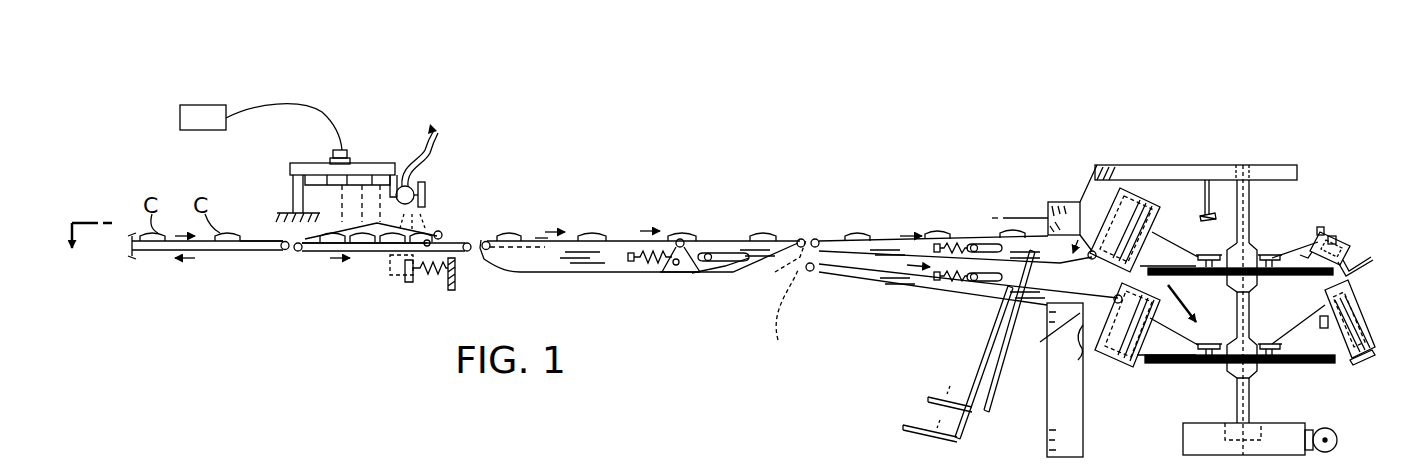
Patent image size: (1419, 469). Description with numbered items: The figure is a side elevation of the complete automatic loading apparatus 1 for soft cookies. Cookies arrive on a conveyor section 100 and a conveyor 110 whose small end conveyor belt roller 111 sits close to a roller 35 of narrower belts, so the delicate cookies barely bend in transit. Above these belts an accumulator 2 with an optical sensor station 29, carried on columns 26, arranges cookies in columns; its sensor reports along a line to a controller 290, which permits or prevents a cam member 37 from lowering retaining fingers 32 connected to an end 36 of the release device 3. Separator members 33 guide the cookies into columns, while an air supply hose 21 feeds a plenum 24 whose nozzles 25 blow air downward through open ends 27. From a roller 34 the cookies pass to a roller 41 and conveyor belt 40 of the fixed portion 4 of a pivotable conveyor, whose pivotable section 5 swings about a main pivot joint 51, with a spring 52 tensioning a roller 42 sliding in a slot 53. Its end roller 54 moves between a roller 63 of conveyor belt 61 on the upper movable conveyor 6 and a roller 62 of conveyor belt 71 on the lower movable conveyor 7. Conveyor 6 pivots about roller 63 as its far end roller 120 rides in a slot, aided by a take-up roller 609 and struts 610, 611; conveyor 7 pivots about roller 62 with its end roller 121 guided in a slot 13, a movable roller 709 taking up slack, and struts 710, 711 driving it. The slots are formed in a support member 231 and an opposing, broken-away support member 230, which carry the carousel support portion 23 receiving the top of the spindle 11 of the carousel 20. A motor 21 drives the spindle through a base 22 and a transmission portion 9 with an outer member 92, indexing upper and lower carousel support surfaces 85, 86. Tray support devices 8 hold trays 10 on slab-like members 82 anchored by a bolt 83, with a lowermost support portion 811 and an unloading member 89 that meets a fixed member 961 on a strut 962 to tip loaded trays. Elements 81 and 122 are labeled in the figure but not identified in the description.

The automatic loading apparatus 1 is at (632, 135).
The accumulator 2 is at (388, 90).
The release device 3 is at (456, 216).
The fixed portion of pivotable conveyor belt 4 is at (620, 230).
The pivotable section 5 is at (727, 228).
The upper movable conveyor belt 6 is at (832, 220).
The lower movable conveyor belt 7 is at (833, 300).
The tray support device 8 is at (1366, 220).
The transmission portion 9 is at (1246, 330).
The trays 10 is at (1351, 300).
The spindle 11 is at (1256, 190).
The slot 13 is at (1088, 362).
The carousel 20 is at (1246, 141).
The motor 21 is at (435, 126).
The base 22 is at (301, 110).
The carousel support portion 23 is at (323, 176).
The plenum 24 is at (404, 186).
The nozzles 25 is at (428, 181).
The columns 26 is at (293, 190).
The nozzle open ends 27 is at (426, 201).
The optical sensor station 29 is at (295, 164).
The retaining fingers 32 is at (445, 237).
The separator member 33 is at (358, 232).
The roller 34 is at (468, 255).
The conveyor belt roller 35 is at (299, 252).
The end of accumulator retaining portion 36 is at (414, 276).
The cam member 37 is at (425, 246).
The conveyor belt 40 is at (535, 238).
The roller 41 is at (490, 255).
The roller 42 is at (720, 263).
The main pivot joint 51 is at (681, 239).
The spring 52 is at (641, 263).
The slot 53 is at (746, 263).
The end roller 54 is at (800, 242).
The conveyor belt 61 is at (883, 240).
The roller 62 is at (802, 288).
The roller 63 is at (815, 238).
The conveyor belt 71 is at (860, 268).
The lower left roller 81 is at (1128, 368).
The slab-like members 82 is at (1152, 235).
The bolt 83 is at (1209, 255).
The upper carousel support surface 85 is at (1282, 276).
The lower carousel support surface 86 is at (1300, 365).
The unloading member 89 is at (1321, 227).
The outer member 92 is at (1264, 252).
The conveyor section 100 is at (128, 190).
The conveyor 110 is at (268, 240).
The end conveyor belt roller 111 is at (283, 258).
The far end roller 120 is at (1090, 252).
The end roller 121 is at (1047, 335).
The frame link 122 is at (1112, 205).
The support member 230 is at (1065, 425).
The support member 231 is at (1046, 212).
The controller 290 is at (206, 105).
The take-up roller 609 is at (976, 244).
The strut 610 is at (994, 385).
The strut 611 is at (972, 415).
The movable roller 709 is at (976, 285).
The strut 710 is at (975, 384).
The strut 711 is at (917, 418).
The lowermost support portion 811 is at (1367, 256).
The fixed member 961 is at (1200, 213).
The strut 962 is at (1205, 214).